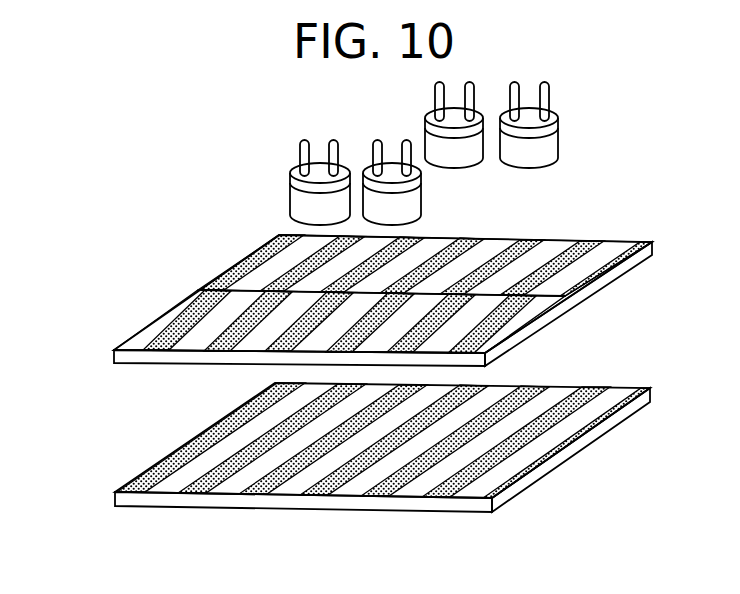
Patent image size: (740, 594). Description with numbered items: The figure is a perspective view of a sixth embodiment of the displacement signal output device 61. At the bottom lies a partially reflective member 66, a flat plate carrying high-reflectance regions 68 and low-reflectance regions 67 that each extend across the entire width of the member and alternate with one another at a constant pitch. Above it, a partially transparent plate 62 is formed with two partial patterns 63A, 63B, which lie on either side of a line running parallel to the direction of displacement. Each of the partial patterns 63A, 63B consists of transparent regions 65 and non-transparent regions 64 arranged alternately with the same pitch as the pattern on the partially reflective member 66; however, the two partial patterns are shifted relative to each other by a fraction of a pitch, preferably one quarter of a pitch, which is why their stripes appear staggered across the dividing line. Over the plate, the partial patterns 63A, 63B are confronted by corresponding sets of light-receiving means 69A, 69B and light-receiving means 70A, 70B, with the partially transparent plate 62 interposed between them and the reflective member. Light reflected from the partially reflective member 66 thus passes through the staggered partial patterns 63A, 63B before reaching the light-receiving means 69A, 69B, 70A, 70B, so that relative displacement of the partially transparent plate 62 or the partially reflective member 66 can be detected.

The displacement signal output device 61 is at (636, 160).
The partially transparent plate 62 is at (630, 262).
The partial pattern 63A is at (268, 226).
The partial pattern 63B is at (191, 280).
The non-transparent regions 64 is at (473, 237).
The transparent regions 65 is at (570, 238).
The partially reflective member 66 is at (582, 440).
The low-reflectance regions 67 is at (313, 488).
The high-reflectance regions 68 is at (281, 488).
The light-receiving means 69A is at (427, 131).
The light-receiving means 69B is at (298, 192).
The light-receiving means 70A is at (553, 142).
The light-receiving means 70B is at (414, 202).